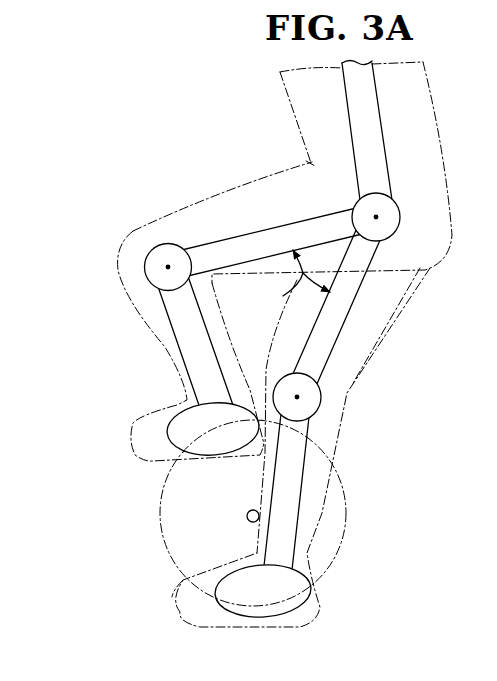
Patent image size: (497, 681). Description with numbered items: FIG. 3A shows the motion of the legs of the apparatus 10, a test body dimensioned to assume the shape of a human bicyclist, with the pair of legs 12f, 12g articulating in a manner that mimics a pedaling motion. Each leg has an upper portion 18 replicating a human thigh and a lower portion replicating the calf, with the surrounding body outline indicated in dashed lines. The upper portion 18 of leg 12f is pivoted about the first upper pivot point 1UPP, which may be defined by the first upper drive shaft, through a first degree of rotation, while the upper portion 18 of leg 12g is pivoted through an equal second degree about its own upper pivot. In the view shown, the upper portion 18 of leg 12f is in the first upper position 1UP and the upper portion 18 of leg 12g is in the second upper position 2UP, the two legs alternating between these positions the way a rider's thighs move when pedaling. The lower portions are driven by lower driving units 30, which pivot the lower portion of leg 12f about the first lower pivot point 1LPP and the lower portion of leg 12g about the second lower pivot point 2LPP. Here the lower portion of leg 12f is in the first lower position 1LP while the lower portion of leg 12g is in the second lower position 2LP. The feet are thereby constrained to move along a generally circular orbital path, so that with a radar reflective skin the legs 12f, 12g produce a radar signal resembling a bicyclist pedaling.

The apparatus 10 is at (230, 111).
The upper portion 18 is at (277, 172).
The leg 12f is at (192, 200).
The leg 12g is at (363, 362).
The first upper position 1UP is at (264, 214).
The first upper pivot point 1UPP is at (376, 217).
The first lower pivot point 1LPP is at (168, 267).
The first lower position 1LP is at (157, 354).
The second upper position 2UP is at (363, 314).
The second lower pivot point 2LPP is at (297, 397).
The second lower position 2LP is at (322, 514).
The lower driving unit 30 is at (246, 315).